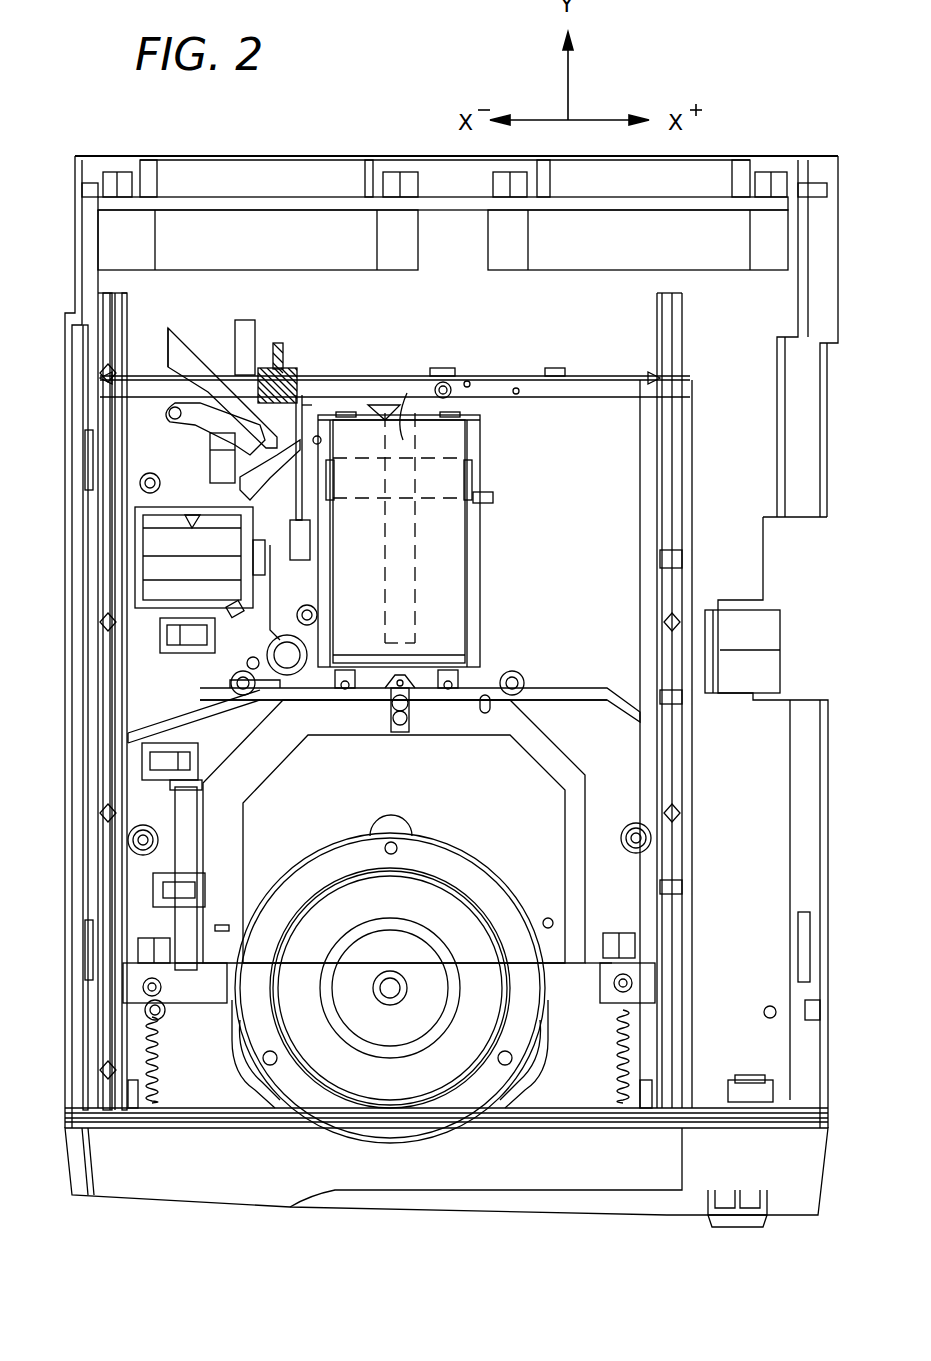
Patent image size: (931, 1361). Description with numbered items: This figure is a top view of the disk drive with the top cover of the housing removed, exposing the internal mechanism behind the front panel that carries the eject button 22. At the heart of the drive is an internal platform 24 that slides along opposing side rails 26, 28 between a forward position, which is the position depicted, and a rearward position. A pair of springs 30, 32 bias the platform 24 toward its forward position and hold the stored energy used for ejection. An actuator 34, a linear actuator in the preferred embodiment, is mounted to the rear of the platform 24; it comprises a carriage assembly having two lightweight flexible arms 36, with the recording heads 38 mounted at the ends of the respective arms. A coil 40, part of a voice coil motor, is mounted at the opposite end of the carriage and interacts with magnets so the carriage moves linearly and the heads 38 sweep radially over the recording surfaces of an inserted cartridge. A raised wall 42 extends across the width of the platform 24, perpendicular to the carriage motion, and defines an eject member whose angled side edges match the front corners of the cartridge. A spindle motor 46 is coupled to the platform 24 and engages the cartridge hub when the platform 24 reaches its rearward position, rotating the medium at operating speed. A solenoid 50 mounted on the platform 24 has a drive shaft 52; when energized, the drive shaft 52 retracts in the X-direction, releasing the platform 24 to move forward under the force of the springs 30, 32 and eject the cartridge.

The eject button 22 is at (738, 1228).
The internal platform 24 is at (531, 854).
The side rail 26 is at (112, 603).
The side rail 28 is at (672, 508).
The spring 30 is at (157, 1093).
The spring 32 is at (615, 1088).
The actuator 34 is at (440, 527).
The flexible arms 36 is at (388, 687).
The recording heads 38 is at (402, 732).
The coil 40 is at (453, 470).
The raised wall 42 is at (575, 697).
The spindle motor 46 is at (463, 939).
The solenoid 50 is at (170, 545).
The drive shaft 52 is at (265, 562).